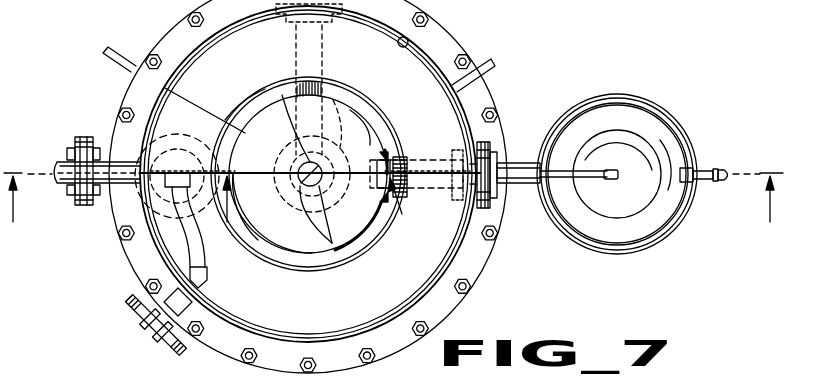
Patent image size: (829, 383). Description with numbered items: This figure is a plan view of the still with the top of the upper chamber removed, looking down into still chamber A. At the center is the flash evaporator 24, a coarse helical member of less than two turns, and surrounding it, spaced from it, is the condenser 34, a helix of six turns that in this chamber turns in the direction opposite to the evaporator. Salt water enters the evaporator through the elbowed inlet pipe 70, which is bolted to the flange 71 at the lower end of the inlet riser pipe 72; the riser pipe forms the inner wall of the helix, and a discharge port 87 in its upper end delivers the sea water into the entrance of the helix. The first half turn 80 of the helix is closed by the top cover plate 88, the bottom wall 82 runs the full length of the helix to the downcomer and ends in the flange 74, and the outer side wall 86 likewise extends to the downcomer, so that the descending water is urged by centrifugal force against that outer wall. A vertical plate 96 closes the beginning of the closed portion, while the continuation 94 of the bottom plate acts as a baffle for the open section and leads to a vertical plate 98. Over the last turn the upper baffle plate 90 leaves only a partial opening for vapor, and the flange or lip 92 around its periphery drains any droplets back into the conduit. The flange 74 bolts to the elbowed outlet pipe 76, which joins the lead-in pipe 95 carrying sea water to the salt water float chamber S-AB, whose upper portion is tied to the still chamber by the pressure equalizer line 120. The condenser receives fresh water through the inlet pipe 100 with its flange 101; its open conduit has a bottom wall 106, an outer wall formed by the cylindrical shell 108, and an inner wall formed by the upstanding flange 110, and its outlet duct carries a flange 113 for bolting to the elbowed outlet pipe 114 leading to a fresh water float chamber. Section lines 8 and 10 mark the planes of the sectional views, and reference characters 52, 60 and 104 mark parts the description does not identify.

The section line 8- 8 is at (393, 184).
The section line 10- 10 is at (311, 206).
The flash evaporator 24 is at (353, 102).
The condenser 34 is at (186, 82).
The inlet pipe 52 is at (113, 50).
The outlet pipe 60 is at (483, 97).
The elbowed inlet pipe 70 is at (305, 78).
The flange 71 is at (318, 96).
The inlet riser pipe 72 is at (320, 212).
The flange 74 is at (395, 157).
The elbowed outlet pipe 76 is at (406, 169).
The first half turn 80 is at (356, 119).
The bottom wall 82 is at (272, 113).
The outer side wall 86 is at (242, 133).
The discharge port 87 is at (302, 164).
The top cover plate 88 is at (322, 84).
The upper baffle plate 90 is at (368, 243).
The flange or lip 92 is at (357, 248).
The continuation of bottom plate 94 is at (206, 256).
The lead-in pipe 95 is at (505, 160).
The vertical plate 96 is at (258, 178).
The vertical plate 98 is at (381, 150).
The inlet pipe 100 is at (205, 270).
The flange 101 is at (132, 303).
The housing wall 104 is at (167, 105).
The bottom wall 106 is at (357, 322).
The cylindrical shell 108 is at (406, 41).
The upstanding flange 110 is at (303, 272).
The flange 113 is at (170, 137).
The elbowed outlet pipe 114 is at (117, 190).
The pressure equalizer line 120 is at (522, 186).
The still chamber A is at (503, 86).
The salt water float chamber S-AB is at (643, 112).